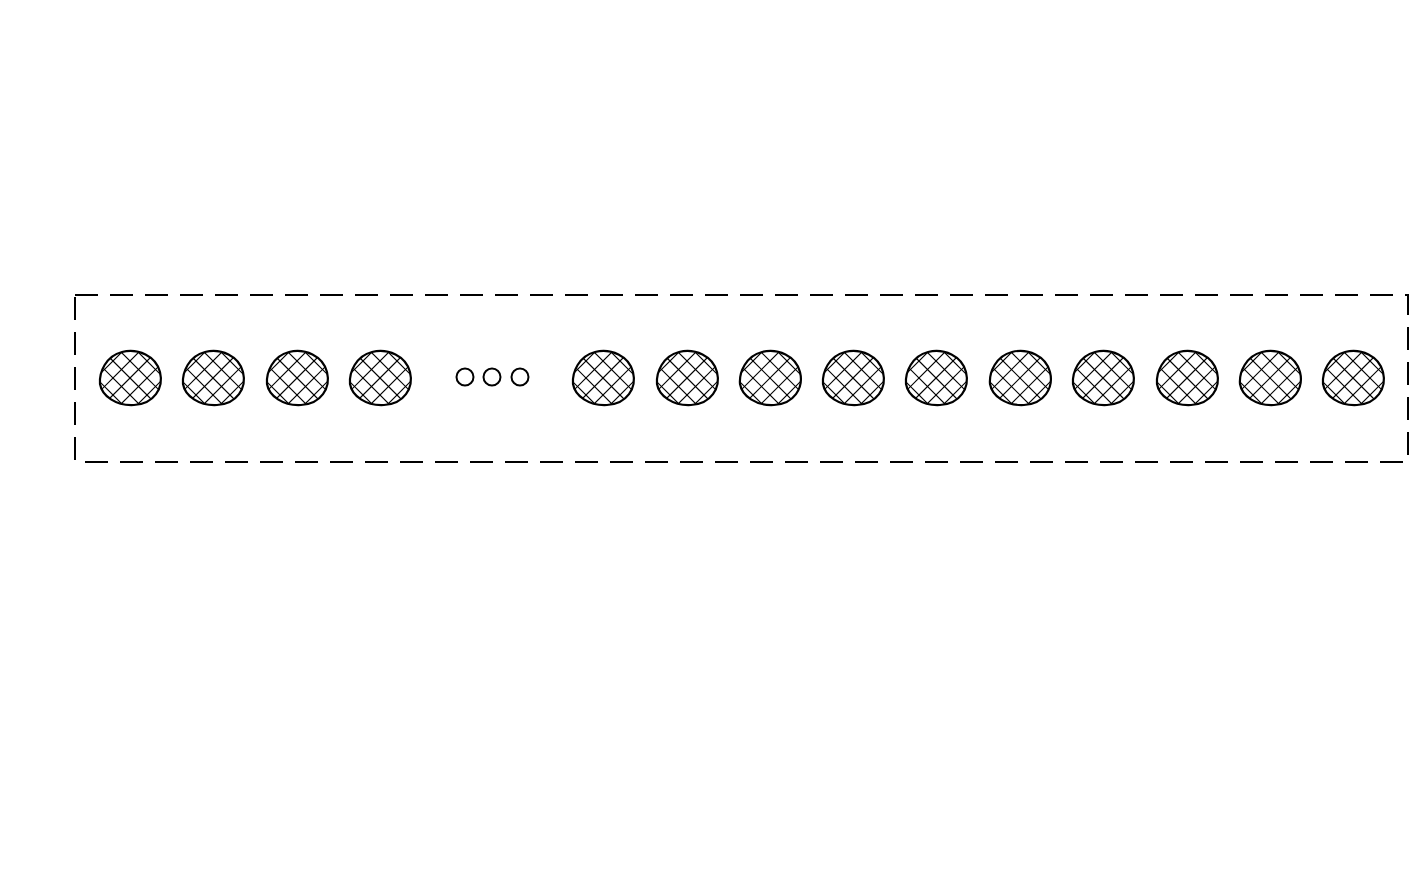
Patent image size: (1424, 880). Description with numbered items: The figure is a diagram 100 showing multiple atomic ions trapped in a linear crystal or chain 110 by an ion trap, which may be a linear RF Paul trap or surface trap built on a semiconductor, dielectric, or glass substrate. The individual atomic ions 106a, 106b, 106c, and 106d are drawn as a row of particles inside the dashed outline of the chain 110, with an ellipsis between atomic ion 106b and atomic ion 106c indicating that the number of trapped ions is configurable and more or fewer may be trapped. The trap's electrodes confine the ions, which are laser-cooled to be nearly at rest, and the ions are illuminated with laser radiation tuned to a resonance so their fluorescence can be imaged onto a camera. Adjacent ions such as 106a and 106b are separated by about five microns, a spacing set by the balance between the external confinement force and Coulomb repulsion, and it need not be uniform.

The diagram 100 is at (240, 60).
The linear crystal or chain 110 is at (800, 295).
The atomic ion 106a is at (155, 360).
The atomic ion 106b is at (237, 360).
The atomic ion 106c is at (1290, 360).
The atomic ion 106d is at (1372, 360).